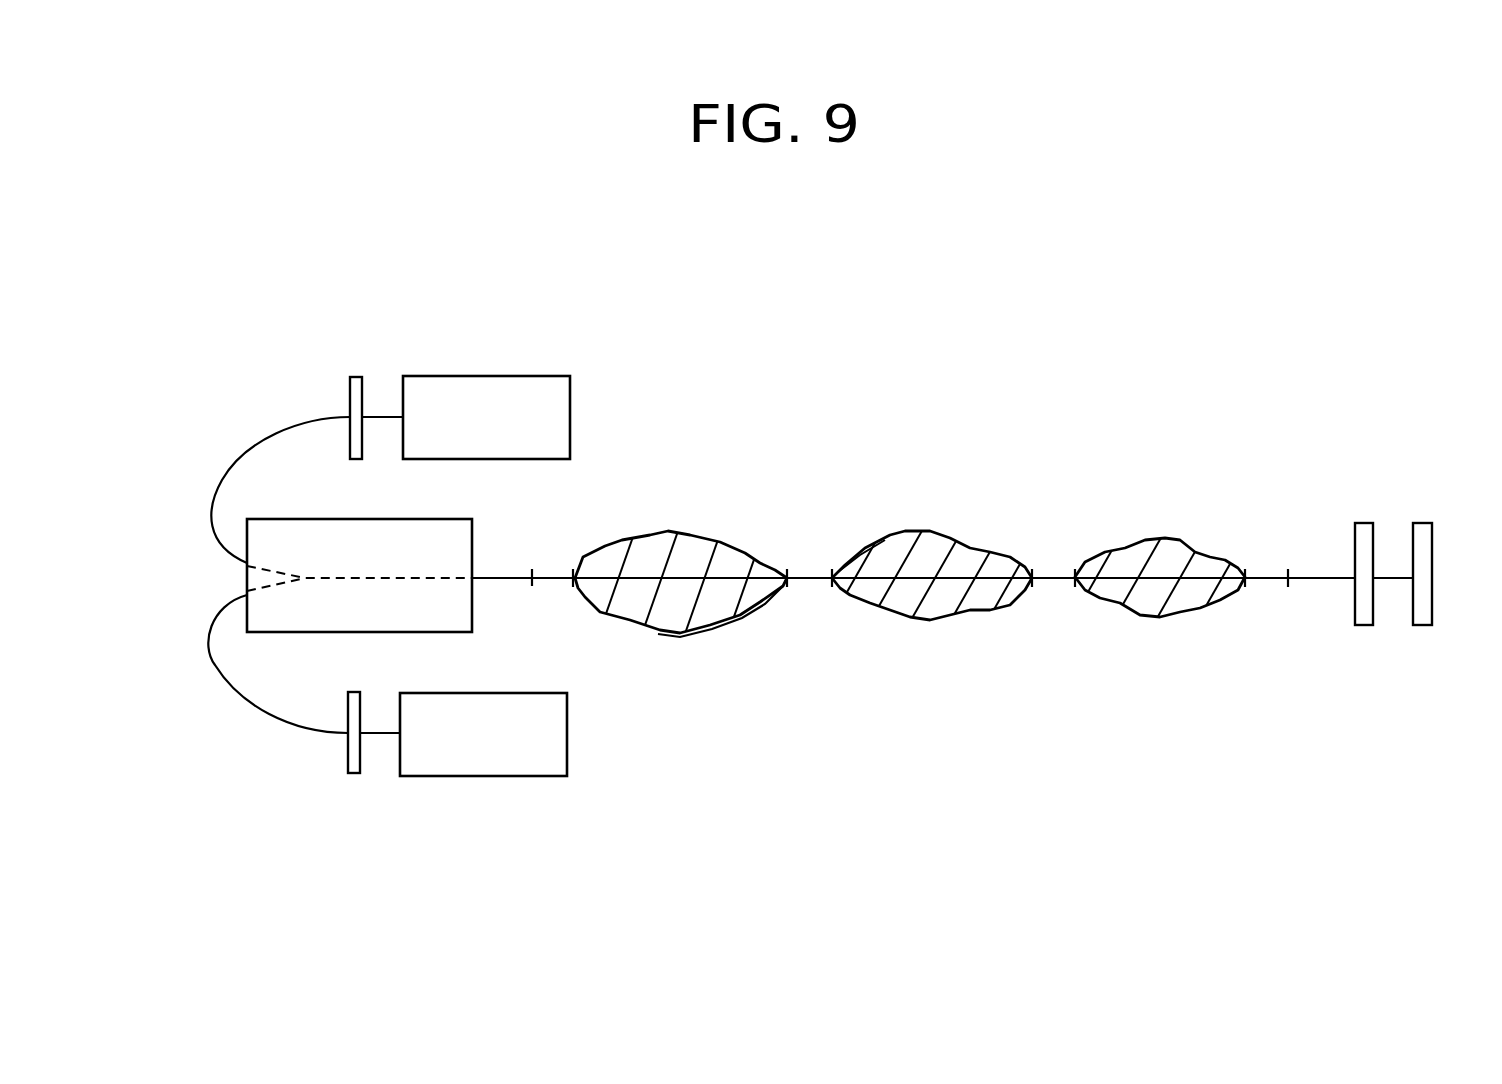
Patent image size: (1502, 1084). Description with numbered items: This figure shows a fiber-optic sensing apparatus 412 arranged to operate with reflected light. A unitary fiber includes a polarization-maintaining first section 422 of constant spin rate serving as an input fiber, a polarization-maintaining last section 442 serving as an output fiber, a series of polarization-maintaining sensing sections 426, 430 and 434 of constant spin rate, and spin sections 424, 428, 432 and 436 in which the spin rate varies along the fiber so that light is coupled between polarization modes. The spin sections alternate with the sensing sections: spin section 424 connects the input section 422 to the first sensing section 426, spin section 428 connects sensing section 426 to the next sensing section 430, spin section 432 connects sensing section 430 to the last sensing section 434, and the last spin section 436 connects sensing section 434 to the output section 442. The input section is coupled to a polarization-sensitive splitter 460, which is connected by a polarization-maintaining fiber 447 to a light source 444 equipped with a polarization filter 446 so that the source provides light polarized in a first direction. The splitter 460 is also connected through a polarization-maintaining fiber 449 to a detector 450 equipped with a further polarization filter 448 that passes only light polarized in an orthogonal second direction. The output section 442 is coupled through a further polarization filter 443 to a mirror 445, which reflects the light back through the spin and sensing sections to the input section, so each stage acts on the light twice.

The fiber optic sensor system 412 is at (791, 604).
The polarization-maintaining first section 422 is at (505, 583).
The spin section 424 is at (553, 580).
The first sensing section 426 is at (673, 572).
The spin section 428 is at (817, 580).
The sensing section 430 is at (932, 573).
The spin section 432 is at (1045, 580).
The last sensing section 434 is at (1167, 573).
The last spin section 436 is at (1265, 580).
The polarization-maintaining last section 442 is at (1325, 577).
The polarization filter 443 is at (1364, 625).
The light source 444 is at (567, 766).
The mirror 445 is at (1420, 625).
The polarization filter 446 is at (353, 773).
The polarization-maintaining fiber 447 is at (258, 707).
The polarization filter 448 is at (355, 377).
The polarization-maintaining fiber 449 is at (258, 453).
The detector 450 is at (570, 387).
The polarization-sensitive splitter 460 is at (383, 632).